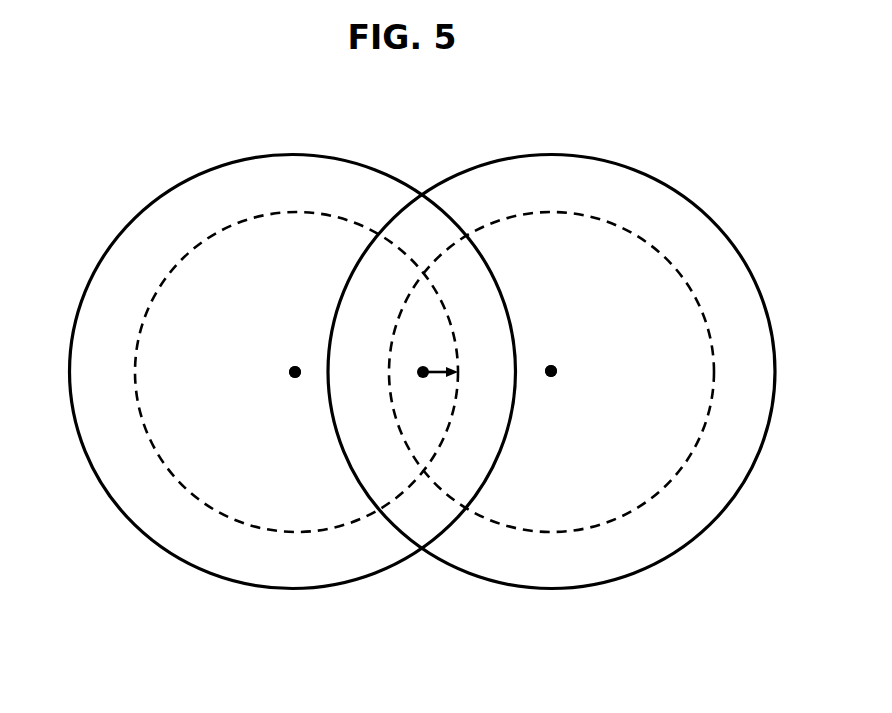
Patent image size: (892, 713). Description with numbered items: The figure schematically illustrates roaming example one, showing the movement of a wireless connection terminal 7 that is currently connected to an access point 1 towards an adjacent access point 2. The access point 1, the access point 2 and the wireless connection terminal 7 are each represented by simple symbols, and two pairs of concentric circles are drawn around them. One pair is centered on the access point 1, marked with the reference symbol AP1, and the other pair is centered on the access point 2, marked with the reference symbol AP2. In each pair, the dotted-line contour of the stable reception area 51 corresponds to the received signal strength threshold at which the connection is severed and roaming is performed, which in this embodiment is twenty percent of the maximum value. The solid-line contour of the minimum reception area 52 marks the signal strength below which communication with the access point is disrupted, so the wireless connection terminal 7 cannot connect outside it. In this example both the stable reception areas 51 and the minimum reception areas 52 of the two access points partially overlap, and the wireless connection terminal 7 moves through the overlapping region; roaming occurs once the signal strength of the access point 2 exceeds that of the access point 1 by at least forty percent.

The minimum reception area 52 is at (212, 166).
The stable reception area 51 is at (298, 212).
The access point 1 is at (293, 376).
The access point 2 is at (553, 376).
The wireless connection terminal 7 is at (423, 375).
The access point 1 symbol AP1 is at (286, 359).
The access point 2 symbol AP2 is at (566, 357).